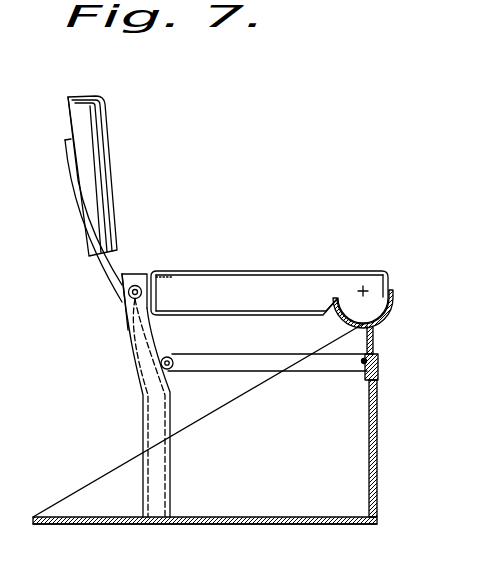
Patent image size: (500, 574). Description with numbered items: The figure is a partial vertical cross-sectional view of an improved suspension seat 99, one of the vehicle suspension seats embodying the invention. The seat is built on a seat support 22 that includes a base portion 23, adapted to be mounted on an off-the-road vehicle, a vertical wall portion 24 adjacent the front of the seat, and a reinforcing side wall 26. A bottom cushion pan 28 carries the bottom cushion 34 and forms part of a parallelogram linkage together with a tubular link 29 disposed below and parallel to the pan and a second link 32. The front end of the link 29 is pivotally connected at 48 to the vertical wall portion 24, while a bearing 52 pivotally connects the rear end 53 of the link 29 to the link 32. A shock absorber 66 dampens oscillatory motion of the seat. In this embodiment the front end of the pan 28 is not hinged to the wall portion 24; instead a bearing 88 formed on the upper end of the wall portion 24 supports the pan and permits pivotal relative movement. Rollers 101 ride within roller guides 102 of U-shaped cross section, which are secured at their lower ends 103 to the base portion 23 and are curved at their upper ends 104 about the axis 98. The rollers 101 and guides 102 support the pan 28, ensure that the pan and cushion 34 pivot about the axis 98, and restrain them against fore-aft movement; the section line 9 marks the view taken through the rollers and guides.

The seat support 22 is at (333, 530).
The base portion 23 is at (217, 525).
The vertical wall portion 24 is at (378, 463).
The side wall 26 is at (107, 470).
The bottom cushion pan 28 is at (246, 310).
The link 29 is at (273, 333).
The link 32 is at (69, 169).
The bottom cushion 34 is at (230, 277).
The pivotal connection 48 is at (359, 364).
The bearing 52 is at (172, 358).
The rear end of link 53 is at (219, 357).
The shock absorber 66 is at (106, 124).
The bearing 88 is at (402, 292).
The axis 98 is at (361, 286).
The suspension seat 99 is at (300, 227).
The roller 101 is at (137, 280).
The roller guide 102 is at (175, 452).
The lower end of guide 103 is at (170, 511).
The upper end of guide 104 is at (128, 348).
The section line 9- 9 is at (190, 290).